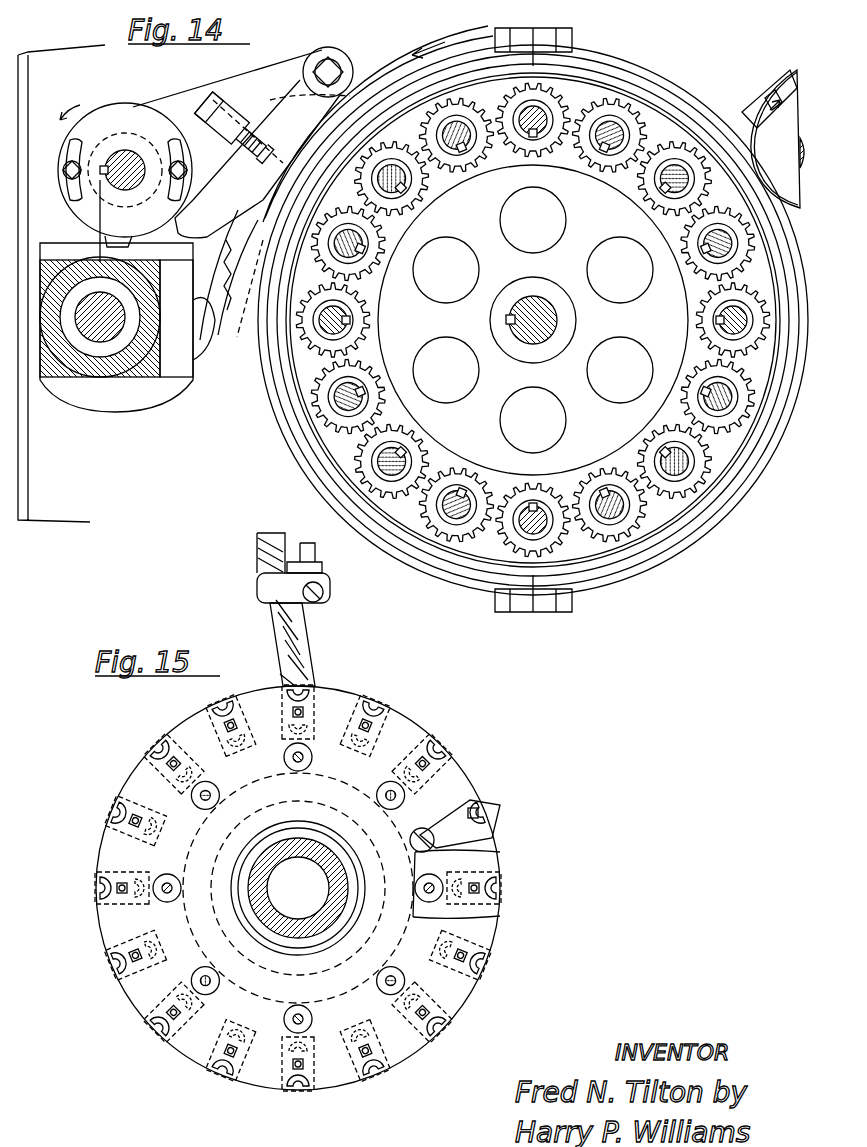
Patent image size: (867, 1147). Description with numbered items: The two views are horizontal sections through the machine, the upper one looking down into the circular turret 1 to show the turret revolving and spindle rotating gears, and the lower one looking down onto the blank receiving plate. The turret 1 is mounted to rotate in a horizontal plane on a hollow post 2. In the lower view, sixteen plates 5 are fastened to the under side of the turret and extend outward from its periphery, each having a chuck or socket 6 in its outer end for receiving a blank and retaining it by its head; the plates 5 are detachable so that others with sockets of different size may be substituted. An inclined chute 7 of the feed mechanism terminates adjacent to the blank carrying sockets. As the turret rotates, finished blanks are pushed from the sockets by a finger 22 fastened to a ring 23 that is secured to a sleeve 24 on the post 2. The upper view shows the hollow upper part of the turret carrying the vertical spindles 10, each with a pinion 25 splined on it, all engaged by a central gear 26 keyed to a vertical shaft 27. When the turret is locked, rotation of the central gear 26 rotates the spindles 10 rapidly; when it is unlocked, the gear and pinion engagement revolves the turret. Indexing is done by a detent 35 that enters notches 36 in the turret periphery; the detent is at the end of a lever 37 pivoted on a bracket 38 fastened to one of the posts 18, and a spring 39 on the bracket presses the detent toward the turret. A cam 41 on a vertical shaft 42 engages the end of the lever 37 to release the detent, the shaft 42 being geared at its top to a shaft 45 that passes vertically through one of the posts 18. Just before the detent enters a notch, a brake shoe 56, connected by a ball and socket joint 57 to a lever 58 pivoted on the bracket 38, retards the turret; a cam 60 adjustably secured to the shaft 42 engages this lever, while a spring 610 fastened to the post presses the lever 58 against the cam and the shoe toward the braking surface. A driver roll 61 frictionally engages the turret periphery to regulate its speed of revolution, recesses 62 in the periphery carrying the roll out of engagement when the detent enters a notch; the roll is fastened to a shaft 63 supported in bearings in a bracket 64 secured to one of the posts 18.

In FIG. 14, the circular turret 1 is at (288, 420).
In FIG. 15, the circular turret 1 is at (418, 722).
In FIG. 15, the hollow post 2 is at (265, 890).
In FIG. 15, the plates 5 is at (474, 970).
In FIG. 15, the chucks or sockets 6 is at (490, 970).
In FIG. 15, the inclined chute 7 is at (312, 632).
In FIG. 14, the spindles 10 is at (640, 530).
In FIG. 14, the posts 18 is at (70, 390).
In FIG. 15, the finger 22 is at (486, 798).
In FIG. 15, the ring 23 is at (490, 854).
In FIG. 15, the sleeve 24 is at (492, 922).
In FIG. 14, the pinion 25 is at (605, 570).
In FIG. 14, the central gear 26 is at (605, 462).
In FIG. 14, the vertical shaft 27 is at (558, 322).
In FIG. 14, the detent 35 is at (366, 134).
In FIG. 14, the notches 36 is at (360, 205).
In FIG. 14, the lever 37 is at (232, 316).
In FIG. 14, the bracket 38 is at (210, 240).
In FIG. 14, the spring 39 is at (255, 95).
In FIG. 14, the cam 41 is at (98, 210).
In FIG. 14, the vertical shaft 42 is at (135, 122).
In FIG. 14, the shaft 45 is at (112, 390).
In FIG. 14, the brake shoe 56 is at (322, 285).
In FIG. 14, the ball and socket joint 57 is at (226, 148).
In FIG. 14, the lever 58 is at (305, 60).
In FIG. 14, the cam 60 is at (100, 250).
In FIG. 14, the driver roll 61 is at (758, 165).
In FIG. 14, the recesses 62 is at (412, 82).
In FIG. 14, the shaft 63 is at (798, 152).
In FIG. 14, the bracket 64 is at (785, 82).
In FIG. 14, the spring 610 is at (206, 370).